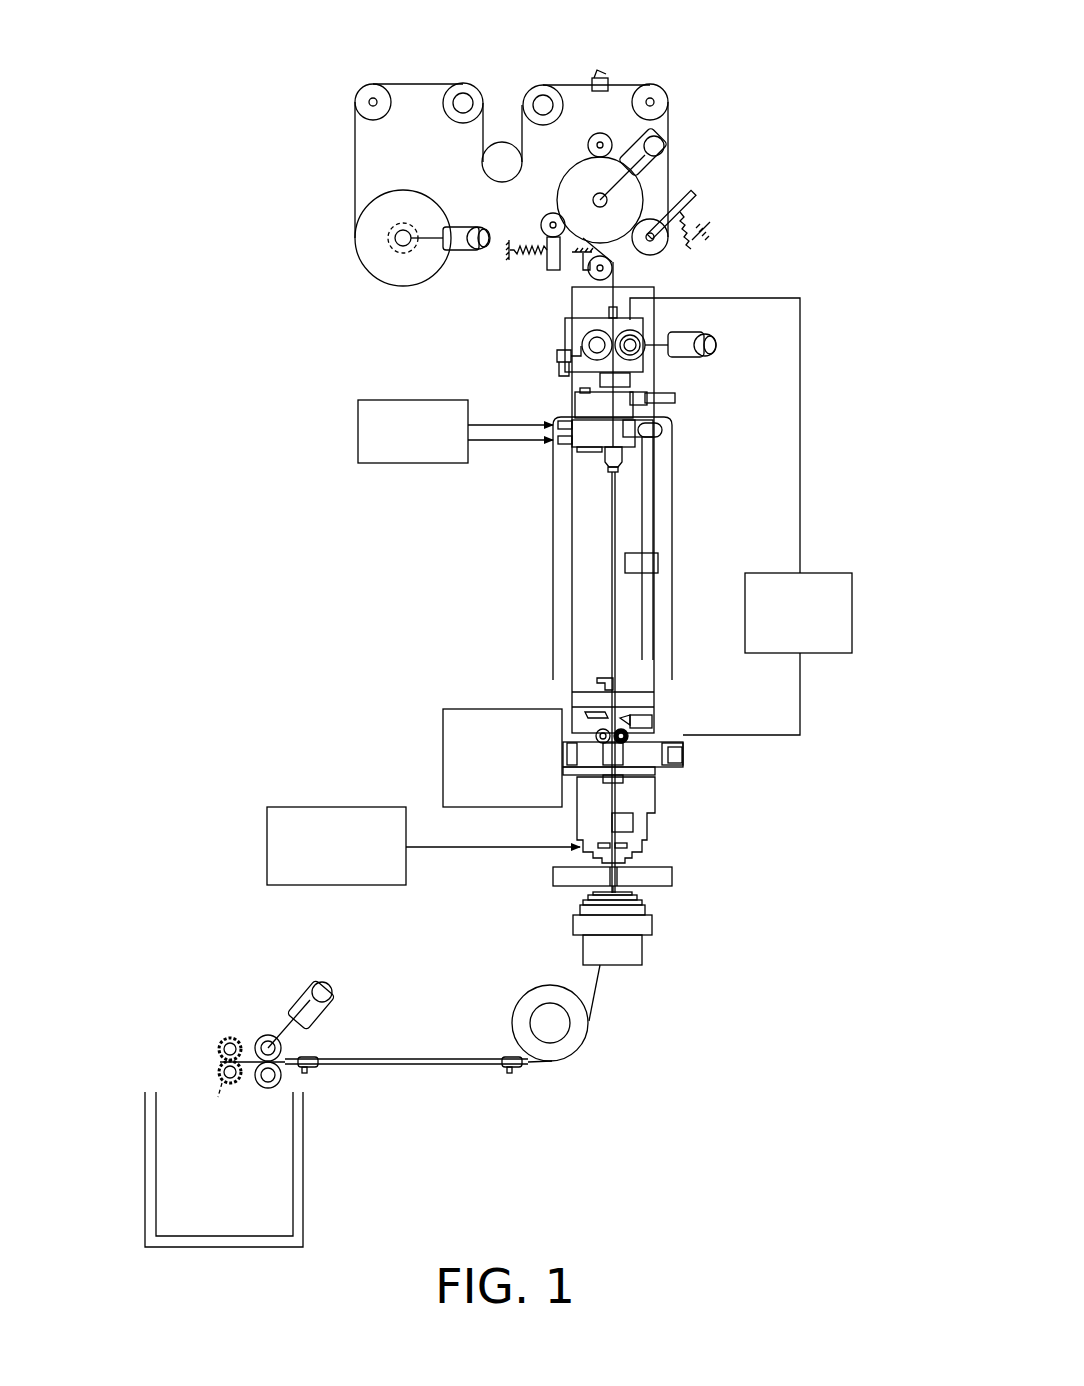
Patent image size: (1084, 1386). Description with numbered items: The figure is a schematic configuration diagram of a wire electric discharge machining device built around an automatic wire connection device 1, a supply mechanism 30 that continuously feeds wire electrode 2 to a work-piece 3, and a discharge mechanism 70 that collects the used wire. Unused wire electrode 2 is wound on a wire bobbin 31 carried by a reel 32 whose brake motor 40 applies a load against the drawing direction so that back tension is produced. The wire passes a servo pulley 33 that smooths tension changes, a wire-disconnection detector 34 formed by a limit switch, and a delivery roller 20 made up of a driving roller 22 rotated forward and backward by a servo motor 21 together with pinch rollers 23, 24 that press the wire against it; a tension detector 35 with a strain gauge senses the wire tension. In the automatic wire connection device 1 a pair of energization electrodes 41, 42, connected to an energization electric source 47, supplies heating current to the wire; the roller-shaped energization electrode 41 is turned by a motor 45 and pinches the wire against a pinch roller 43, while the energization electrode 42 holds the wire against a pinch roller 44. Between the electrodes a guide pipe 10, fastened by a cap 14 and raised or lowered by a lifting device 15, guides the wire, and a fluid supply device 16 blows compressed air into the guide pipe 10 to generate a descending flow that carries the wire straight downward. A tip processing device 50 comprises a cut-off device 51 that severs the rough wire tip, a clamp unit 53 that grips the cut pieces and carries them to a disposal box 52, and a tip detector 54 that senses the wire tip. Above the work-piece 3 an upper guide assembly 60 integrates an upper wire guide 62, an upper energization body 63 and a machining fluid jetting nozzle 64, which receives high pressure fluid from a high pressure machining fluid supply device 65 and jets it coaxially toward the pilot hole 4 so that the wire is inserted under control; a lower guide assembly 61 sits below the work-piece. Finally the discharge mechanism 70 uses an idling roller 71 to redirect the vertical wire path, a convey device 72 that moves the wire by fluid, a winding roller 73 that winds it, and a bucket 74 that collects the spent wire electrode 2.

The automatic wire connection device 1 is at (725, 272).
The wire electrode 2 is at (418, 83).
The work-piece 3 is at (565, 882).
The pilot hole 4 is at (617, 880).
The guide pipe 10 is at (608, 552).
The cap 14 is at (603, 458).
The lifting device 15 is at (646, 532).
The fluid supply device 16 is at (428, 403).
The delivery roller 20 is at (618, 248).
The servo motor 21 is at (657, 147).
The driving roller 22 is at (642, 198).
The pinch roller 23 is at (652, 220).
The pinch roller 24 is at (552, 220).
The supply mechanism 30 is at (478, 56).
The wire bobbin 31 is at (392, 277).
The reel 32 is at (393, 245).
The servo pulley 33 is at (487, 170).
The wire-disconnection detector 34 is at (603, 75).
The tension detector 35 is at (578, 263).
The brake motor 40 is at (462, 248).
The energization electrode 41 is at (640, 330).
The energization electrode 42 is at (625, 740).
The pinch roller 43 is at (593, 332).
The pinch roller 44 is at (602, 730).
The motor 45 is at (685, 355).
The energization electric source 47 is at (822, 574).
The tip processing device 50 is at (550, 700).
The cut-off device 51 is at (655, 720).
The disposal box 52 is at (463, 712).
The clamp unit 53 is at (683, 757).
The tip detector 54 is at (655, 780).
The upper guide assembly 60 is at (650, 847).
The lower guide assembly 61 is at (643, 950).
The upper wire guide 62 is at (637, 847).
The upper energization body 63 is at (633, 823).
The machining fluid jetting nozzle 64 is at (620, 862).
The high pressure machining fluid supply device 65 is at (305, 810).
The discharge mechanism 70 is at (395, 1108).
The idling roller 71 is at (535, 988).
The convey device 72 is at (452, 1065).
The winding roller 73 is at (257, 1032).
The bucket 74 is at (303, 1192).